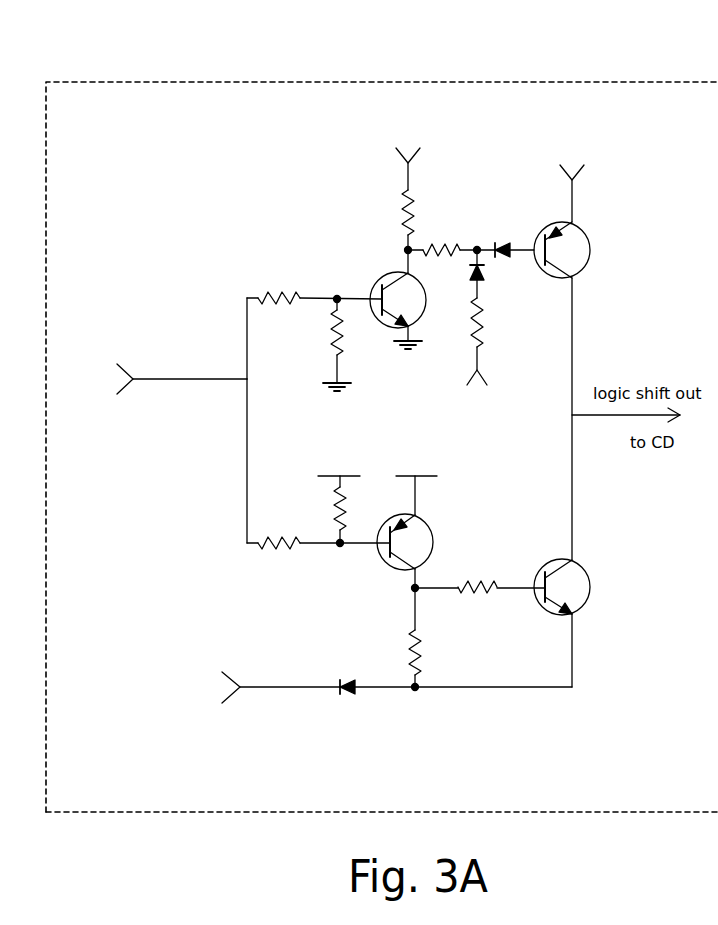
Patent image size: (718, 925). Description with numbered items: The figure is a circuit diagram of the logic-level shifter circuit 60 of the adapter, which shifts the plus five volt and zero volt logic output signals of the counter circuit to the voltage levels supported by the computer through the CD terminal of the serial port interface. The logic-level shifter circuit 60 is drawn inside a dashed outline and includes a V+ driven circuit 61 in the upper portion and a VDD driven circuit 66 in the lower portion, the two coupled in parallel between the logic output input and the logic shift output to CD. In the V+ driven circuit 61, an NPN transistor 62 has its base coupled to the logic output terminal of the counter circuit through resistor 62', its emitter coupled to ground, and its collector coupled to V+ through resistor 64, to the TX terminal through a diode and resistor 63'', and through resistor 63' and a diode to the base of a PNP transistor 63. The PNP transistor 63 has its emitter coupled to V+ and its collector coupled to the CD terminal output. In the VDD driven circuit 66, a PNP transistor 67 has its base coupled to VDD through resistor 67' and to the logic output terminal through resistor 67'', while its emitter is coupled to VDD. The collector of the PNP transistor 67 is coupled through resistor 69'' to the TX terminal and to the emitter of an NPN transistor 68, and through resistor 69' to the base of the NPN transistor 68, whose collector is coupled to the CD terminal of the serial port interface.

The logic-level shifter circuit 60 is at (382, 419).
The V+ driven circuit 61 is at (380, 271).
The NPN transistor 62 is at (388, 298).
The resistor 62' is at (264, 279).
The PNP transistor 63 is at (588, 221).
The resistor 63' is at (461, 232).
The resistor 63'' is at (509, 341).
The resistor 64 is at (393, 218).
The VDD driven circuit 66 is at (394, 541).
The PNP transistor 67 is at (424, 543).
The resistor 67' is at (317, 499).
The resistor 67'' is at (261, 562).
The NPN transistor 68 is at (592, 587).
The resistor 69' is at (489, 571).
The resistor 69'' is at (449, 657).